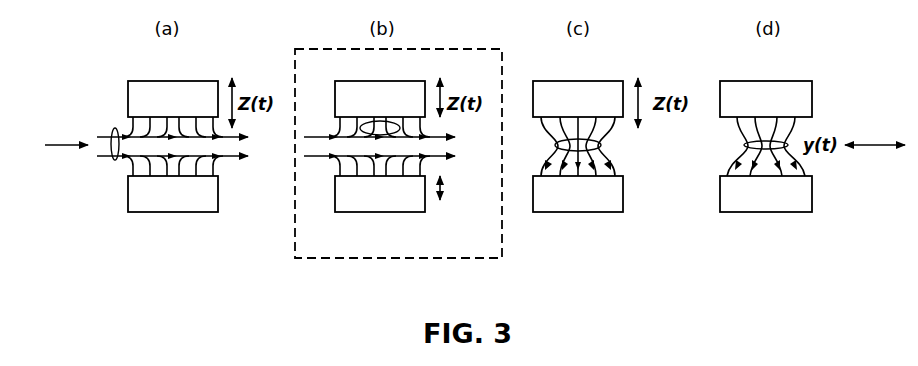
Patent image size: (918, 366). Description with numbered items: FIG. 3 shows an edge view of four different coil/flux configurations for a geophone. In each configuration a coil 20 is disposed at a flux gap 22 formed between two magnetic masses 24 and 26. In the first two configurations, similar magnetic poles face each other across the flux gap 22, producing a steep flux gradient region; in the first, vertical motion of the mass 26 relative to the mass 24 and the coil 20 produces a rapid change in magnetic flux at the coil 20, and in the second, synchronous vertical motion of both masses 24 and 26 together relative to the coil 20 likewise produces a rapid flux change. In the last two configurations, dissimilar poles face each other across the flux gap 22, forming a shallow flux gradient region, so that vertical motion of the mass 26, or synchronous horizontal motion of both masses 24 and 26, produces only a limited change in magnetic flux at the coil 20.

The coil 20 is at (431, 161).
The flux gap 22 is at (53, 145).
The magnetic mass 24 is at (470, 213).
The magnetic mass 26 is at (470, 84).